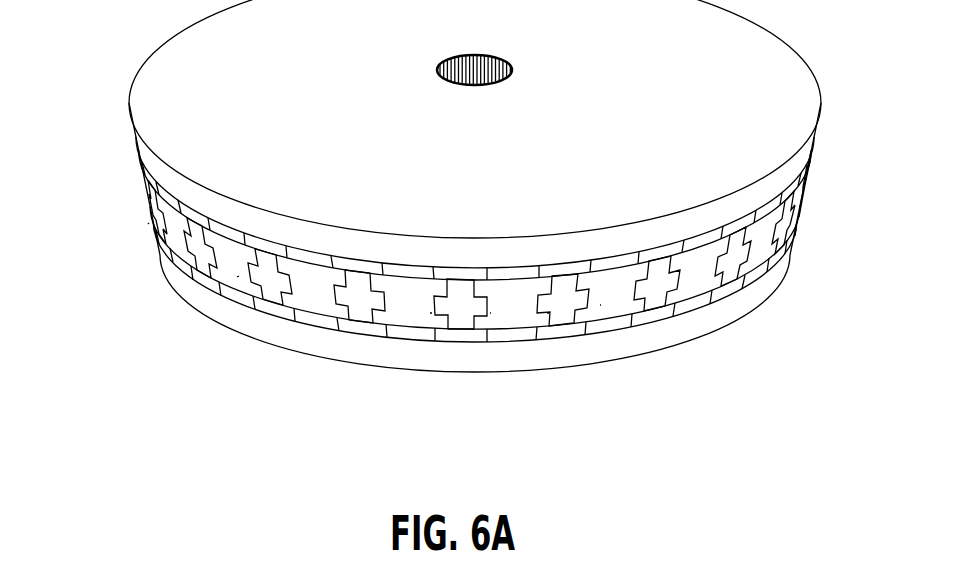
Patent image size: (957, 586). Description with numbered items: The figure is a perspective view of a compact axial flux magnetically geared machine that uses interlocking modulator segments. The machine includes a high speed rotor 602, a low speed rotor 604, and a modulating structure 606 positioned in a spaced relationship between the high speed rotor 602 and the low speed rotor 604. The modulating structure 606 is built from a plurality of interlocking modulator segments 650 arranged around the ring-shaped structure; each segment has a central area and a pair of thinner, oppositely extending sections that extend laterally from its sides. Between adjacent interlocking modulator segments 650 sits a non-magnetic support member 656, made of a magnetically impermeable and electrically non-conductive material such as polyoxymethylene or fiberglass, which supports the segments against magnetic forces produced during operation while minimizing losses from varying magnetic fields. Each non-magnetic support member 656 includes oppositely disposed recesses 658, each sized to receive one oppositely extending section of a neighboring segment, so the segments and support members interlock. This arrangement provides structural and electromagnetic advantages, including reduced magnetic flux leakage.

The high speed rotor 602 is at (132, 190).
The low speed rotor 604 is at (768, 262).
The modulating structure 606 is at (817, 147).
The interlocking modulator segment 650 is at (190, 243).
The non-magnetic support member 656 is at (237, 277).
The oppositely disposed recess 658 is at (148, 223).